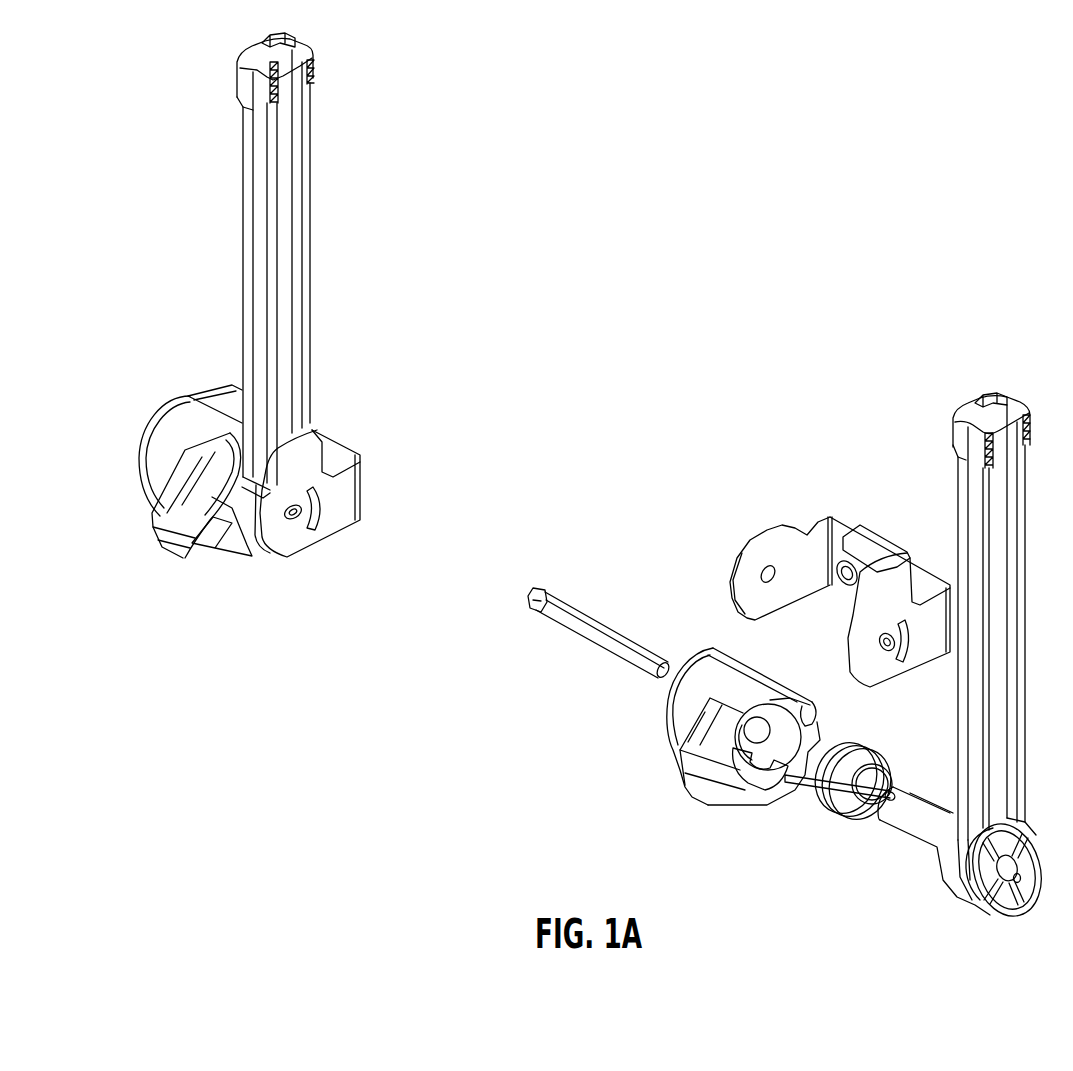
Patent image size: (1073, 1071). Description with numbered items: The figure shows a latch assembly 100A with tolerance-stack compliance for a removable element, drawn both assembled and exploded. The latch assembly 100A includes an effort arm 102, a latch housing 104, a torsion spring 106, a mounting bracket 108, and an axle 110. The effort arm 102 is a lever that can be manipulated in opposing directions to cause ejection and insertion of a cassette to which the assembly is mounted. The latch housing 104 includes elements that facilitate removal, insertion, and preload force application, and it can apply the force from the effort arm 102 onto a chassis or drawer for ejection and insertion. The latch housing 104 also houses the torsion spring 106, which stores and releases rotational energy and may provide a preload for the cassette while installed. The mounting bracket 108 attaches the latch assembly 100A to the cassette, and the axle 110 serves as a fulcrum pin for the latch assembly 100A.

The latch assembly 100A is at (360, 218).
The effort arm 102 is at (958, 478).
The latch housing 104 is at (670, 701).
The torsion spring 106 is at (830, 806).
The mounting bracket 108 is at (817, 553).
The axle 110 is at (551, 619).